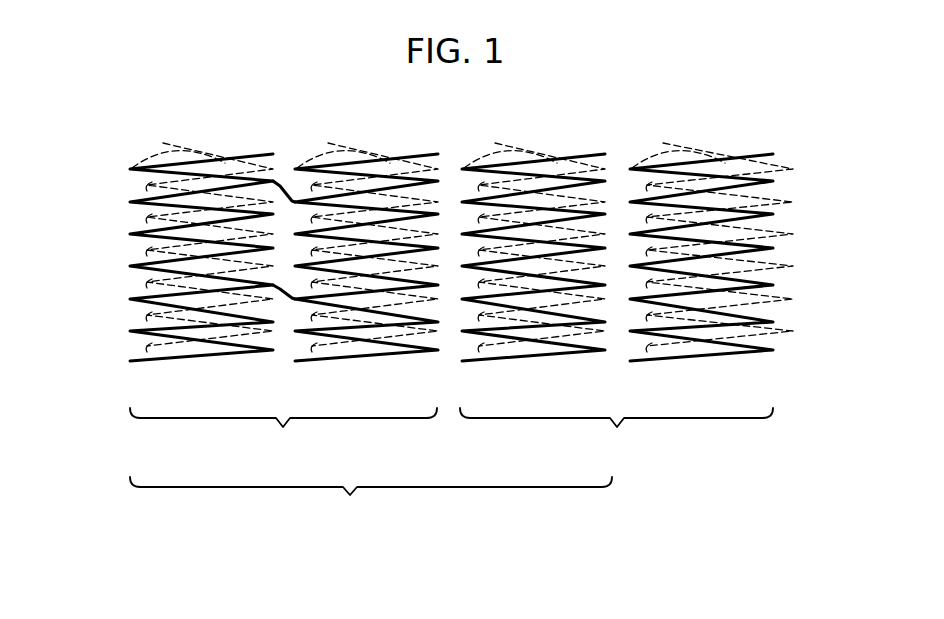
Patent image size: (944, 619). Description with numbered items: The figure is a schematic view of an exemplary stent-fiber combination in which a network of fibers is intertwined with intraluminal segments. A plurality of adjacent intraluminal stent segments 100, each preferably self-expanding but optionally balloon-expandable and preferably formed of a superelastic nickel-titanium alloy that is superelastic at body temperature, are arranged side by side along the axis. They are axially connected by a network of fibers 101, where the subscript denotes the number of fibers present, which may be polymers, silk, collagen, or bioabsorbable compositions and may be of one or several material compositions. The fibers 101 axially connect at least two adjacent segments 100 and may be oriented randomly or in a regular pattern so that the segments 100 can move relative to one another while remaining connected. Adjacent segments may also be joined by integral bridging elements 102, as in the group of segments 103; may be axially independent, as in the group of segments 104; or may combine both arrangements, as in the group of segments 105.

The intraluminal stent segment 100 is at (224, 155).
The fiber 101 is at (141, 185).
The integral bridging element 102 is at (289, 291).
The group of segments connected by integral bridging elements 103 is at (283, 434).
The group of axially independent segments 104 is at (616, 434).
The group of segments combining bridged and independent connection 105 is at (371, 505).